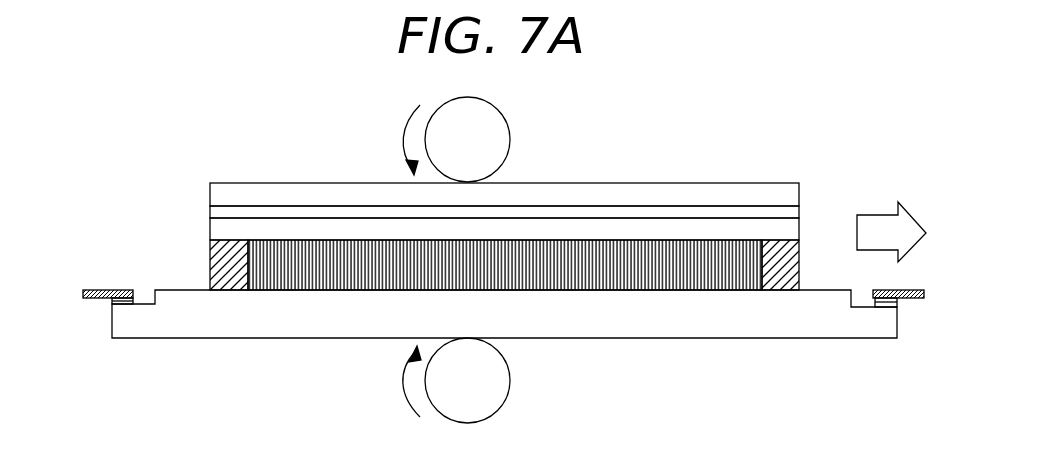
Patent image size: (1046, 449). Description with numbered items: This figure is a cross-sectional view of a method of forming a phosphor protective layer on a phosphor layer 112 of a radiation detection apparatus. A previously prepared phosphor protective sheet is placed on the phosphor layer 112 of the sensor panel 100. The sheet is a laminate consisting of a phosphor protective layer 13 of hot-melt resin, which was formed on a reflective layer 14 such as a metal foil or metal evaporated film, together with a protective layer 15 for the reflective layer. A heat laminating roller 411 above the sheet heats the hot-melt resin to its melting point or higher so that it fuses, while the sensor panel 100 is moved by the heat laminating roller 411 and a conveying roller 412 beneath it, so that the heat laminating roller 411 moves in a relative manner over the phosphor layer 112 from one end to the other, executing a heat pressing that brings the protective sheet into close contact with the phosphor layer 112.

The sensor panel 100 is at (748, 327).
The phosphor layer 112 is at (329, 280).
The phosphor protective layer 13 is at (618, 225).
The reflective layer 14 is at (688, 213).
The protective layer for reflective layer 15 is at (762, 195).
The heat laminating roller 411 is at (495, 125).
The conveying roller 412 is at (498, 383).